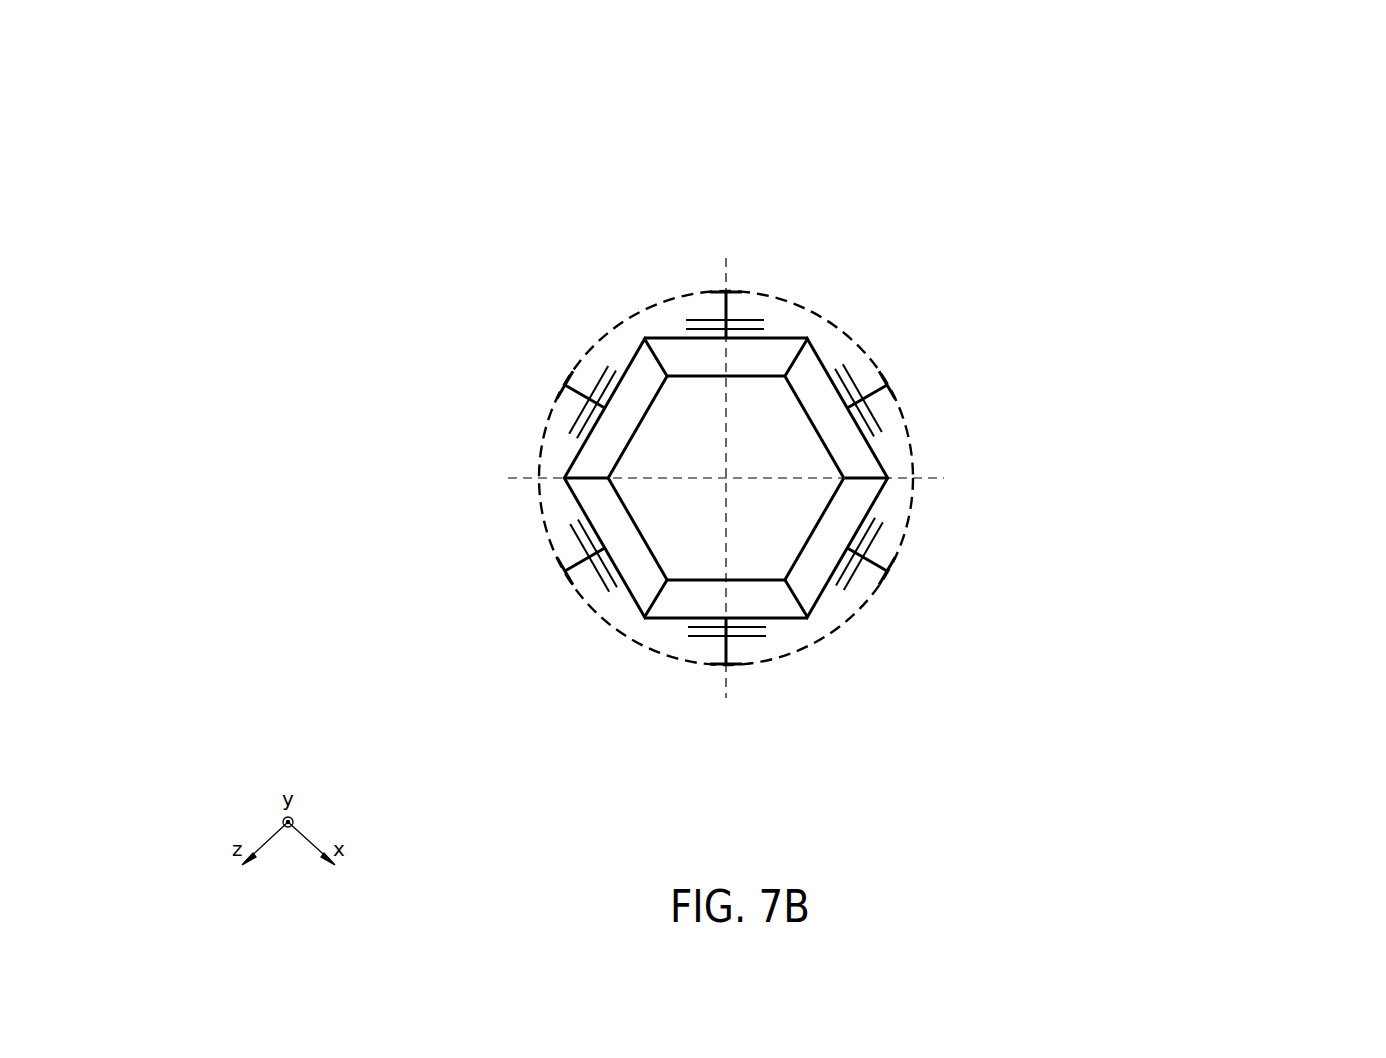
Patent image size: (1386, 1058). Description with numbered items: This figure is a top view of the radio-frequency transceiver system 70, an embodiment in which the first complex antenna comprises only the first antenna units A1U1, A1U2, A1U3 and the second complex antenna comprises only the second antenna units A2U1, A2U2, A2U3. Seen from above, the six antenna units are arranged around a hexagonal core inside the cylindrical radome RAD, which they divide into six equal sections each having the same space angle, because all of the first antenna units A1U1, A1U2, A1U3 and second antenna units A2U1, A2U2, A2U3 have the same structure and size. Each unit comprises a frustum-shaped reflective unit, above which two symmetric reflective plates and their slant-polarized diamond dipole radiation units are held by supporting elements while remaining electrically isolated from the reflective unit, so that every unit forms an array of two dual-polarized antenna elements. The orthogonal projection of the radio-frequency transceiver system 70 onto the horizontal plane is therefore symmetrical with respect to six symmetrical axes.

The radio-frequency transceiver system 70 is at (750, 477).
The cylindrical radome RAD is at (843, 328).
The first antenna unit A1U1 is at (647, 726).
The first antenna unit A1U2 is at (398, 381).
The first antenna unit A1U3 is at (1078, 380).
The second antenna unit A2U1 is at (408, 581).
The second antenna unit A2U2 is at (663, 239).
The second antenna unit A2U3 is at (1045, 579).